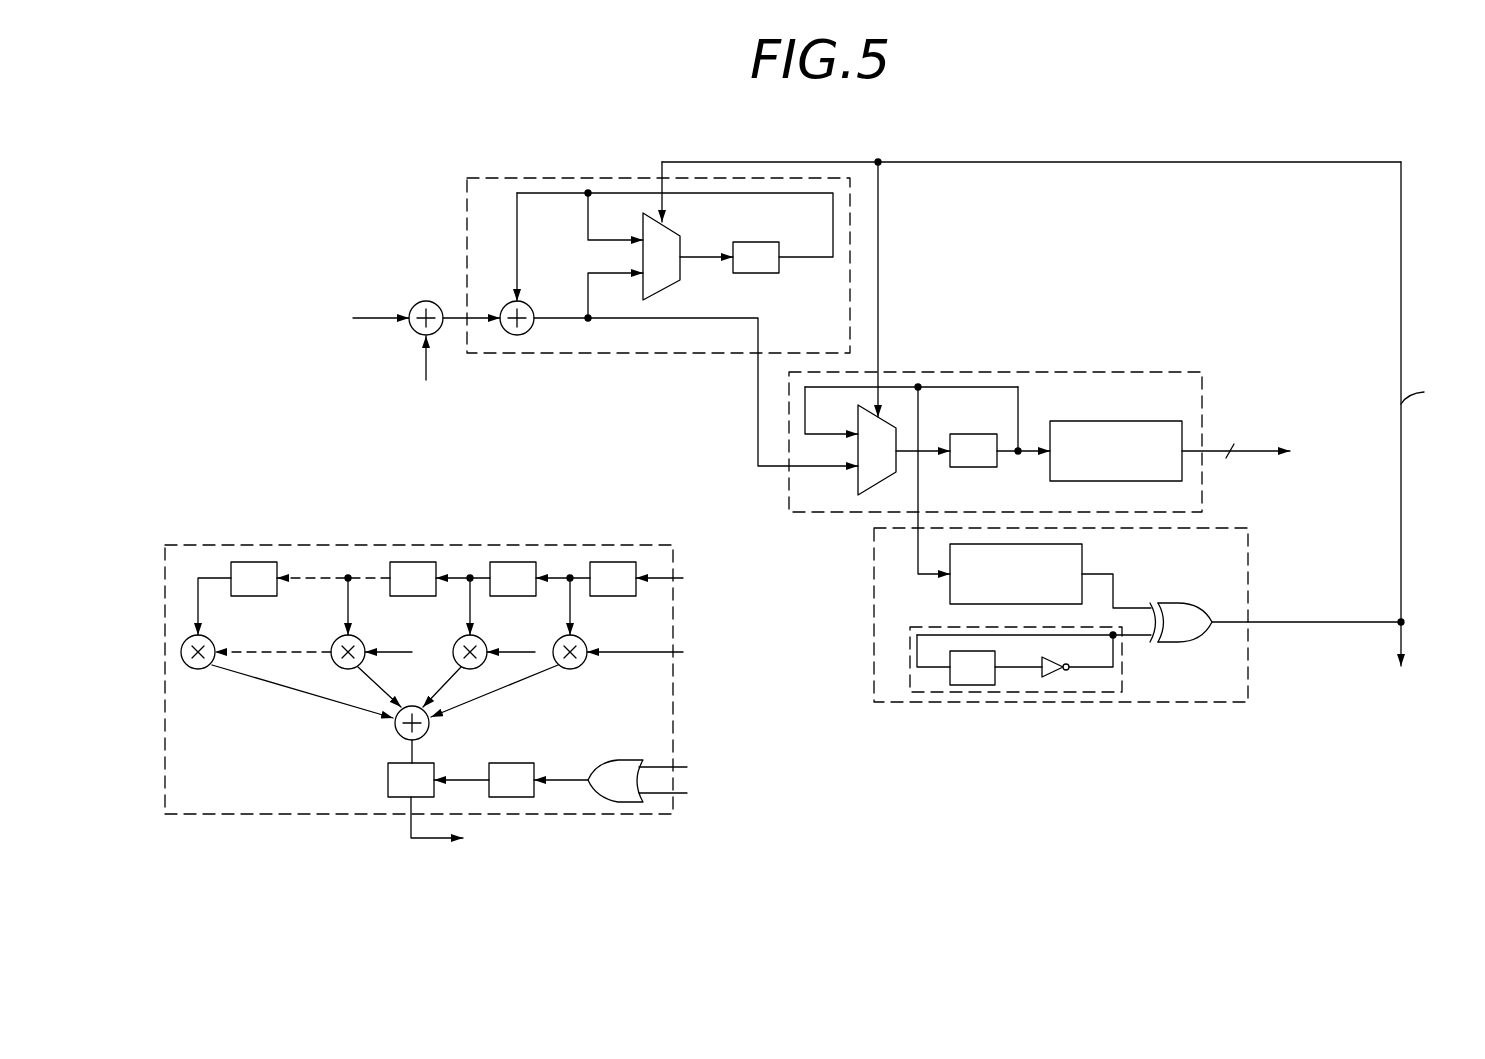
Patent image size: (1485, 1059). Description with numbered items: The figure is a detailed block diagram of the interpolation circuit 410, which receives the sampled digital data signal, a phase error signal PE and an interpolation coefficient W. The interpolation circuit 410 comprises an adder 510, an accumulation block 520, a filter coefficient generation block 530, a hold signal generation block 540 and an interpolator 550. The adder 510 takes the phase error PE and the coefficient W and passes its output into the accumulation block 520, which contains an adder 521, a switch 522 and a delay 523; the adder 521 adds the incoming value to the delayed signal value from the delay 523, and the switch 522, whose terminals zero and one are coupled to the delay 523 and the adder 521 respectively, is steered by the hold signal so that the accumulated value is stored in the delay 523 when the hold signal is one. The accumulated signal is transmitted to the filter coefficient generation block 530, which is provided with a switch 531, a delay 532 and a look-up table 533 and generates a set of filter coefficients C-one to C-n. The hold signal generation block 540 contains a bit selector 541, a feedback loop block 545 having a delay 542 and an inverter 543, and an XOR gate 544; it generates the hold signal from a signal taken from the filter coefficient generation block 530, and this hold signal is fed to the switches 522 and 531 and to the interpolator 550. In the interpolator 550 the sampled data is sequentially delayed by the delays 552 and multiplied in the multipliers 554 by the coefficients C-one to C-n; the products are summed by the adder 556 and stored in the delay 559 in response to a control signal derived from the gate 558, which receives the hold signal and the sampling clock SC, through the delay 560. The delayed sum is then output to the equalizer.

The interpolation circuit 410 is at (1074, 122).
The adder 510 is at (417, 305).
The accumulation block 520 is at (467, 218).
The adder 521 is at (522, 337).
The switch 522 is at (676, 224).
The delay 523 is at (780, 273).
The filter coefficient generation block 530 is at (970, 355).
The switch 531 is at (882, 482).
The delay 532 is at (971, 434).
The look-up table 533 is at (1127, 421).
The HOLD signal generation block 540 is at (1248, 572).
The bit selector 541 is at (1082, 560).
The delay 542 is at (966, 651).
The inverter 543 is at (1057, 677).
The XOR gate 544 is at (1185, 602).
The feedback loop block 545 is at (907, 652).
The interpolator 550 is at (532, 532).
The delays 552 is at (265, 596).
The multipliers 554 is at (191, 669).
The adder 556 is at (428, 730).
The AND gate 558 is at (640, 747).
The delay 559 is at (388, 776).
The delay 560 is at (518, 762).